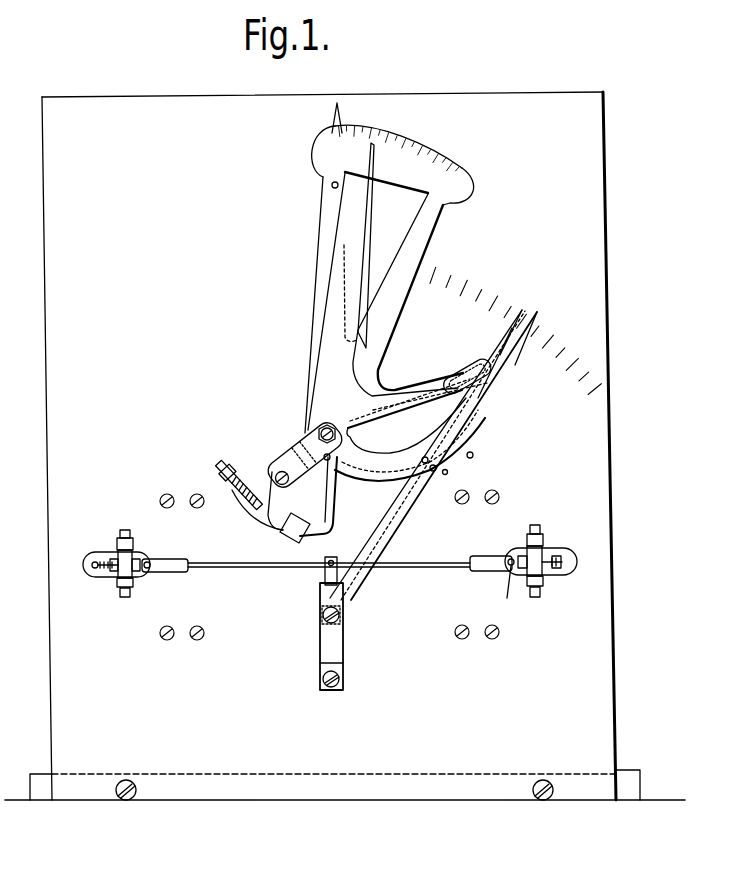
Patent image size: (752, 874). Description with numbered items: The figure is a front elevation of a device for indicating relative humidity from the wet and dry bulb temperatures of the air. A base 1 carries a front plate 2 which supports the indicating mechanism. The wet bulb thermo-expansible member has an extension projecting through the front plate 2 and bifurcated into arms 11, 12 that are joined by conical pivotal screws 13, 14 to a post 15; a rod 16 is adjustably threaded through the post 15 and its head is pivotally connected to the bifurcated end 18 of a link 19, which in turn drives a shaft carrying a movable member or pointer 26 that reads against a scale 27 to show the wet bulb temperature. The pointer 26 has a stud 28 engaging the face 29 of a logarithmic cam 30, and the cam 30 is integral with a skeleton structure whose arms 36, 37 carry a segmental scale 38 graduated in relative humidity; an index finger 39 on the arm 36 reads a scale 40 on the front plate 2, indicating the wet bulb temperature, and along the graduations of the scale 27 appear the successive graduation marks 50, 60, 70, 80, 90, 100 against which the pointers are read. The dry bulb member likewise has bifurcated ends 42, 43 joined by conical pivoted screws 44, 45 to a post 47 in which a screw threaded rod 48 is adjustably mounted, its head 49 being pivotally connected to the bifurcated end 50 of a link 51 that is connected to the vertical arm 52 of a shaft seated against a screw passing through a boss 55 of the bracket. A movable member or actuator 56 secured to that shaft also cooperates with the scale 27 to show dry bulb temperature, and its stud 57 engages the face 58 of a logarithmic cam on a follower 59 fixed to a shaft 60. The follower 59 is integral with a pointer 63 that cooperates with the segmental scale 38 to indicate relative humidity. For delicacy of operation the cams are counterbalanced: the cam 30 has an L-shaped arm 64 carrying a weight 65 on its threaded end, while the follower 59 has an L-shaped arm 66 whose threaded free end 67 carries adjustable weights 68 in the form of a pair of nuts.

The base 1 is at (633, 779).
The front plate 2 is at (608, 697).
The arm of bifurcation 11 is at (116, 547).
The arm of bifurcation 12 is at (118, 583).
The conical pivotal screw 13 is at (129, 540).
The conical pivotal screw 14 is at (133, 594).
The post 15 is at (133, 573).
The rod 16 is at (99, 572).
The bifurcated end of link 18 is at (172, 560).
The link 19 is at (246, 567).
The movable member or pointer 26 is at (405, 490).
The scale 27 is at (493, 293).
The stud 28 is at (422, 458).
The face of logarithmic cam 29 is at (480, 426).
The logarithmic cam 30 is at (468, 366).
The arm 36 is at (333, 221).
The arm 37 is at (425, 232).
The segmental scale 38 is at (412, 177).
The index finger 39 is at (336, 120).
The scale 40 is at (239, 130).
The bifurcated end of link 50 is at (486, 571).
The shaft 60 is at (302, 152).
The graduation mark 70 is at (373, 140).
The graduation mark 80 is at (435, 145).
The graduation mark 90 is at (475, 190).
The graduation mark 100 is at (510, 220).
The bifurcated end 42 is at (545, 545).
The bifurcated end 43 is at (544, 579).
The conical pivoted screw 44 is at (537, 534).
The conical pivoted screw 45 is at (541, 596).
The post 47 is at (570, 566).
The screw threaded rod 48 is at (556, 560).
The head 49 is at (511, 592).
The link 51 is at (440, 566).
The vertical arm 52 is at (325, 577).
The boss 55 is at (336, 650).
The movable member or actuator 56 is at (417, 512).
The stud or driver 57 is at (448, 473).
The face of logarithmic cam 58 is at (472, 456).
The follower 59 is at (498, 395).
The pointer 63 is at (338, 291).
The L-shaped arm 64 is at (333, 519).
The weight 65 is at (285, 535).
The L-shaped arm 66 is at (327, 494).
The free end 67 is at (245, 494).
The adjustable weight 68 is at (238, 470).